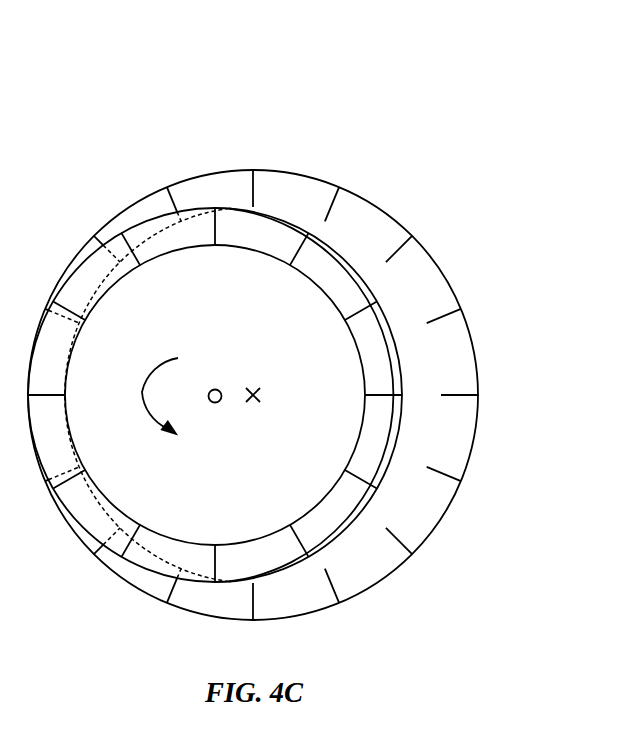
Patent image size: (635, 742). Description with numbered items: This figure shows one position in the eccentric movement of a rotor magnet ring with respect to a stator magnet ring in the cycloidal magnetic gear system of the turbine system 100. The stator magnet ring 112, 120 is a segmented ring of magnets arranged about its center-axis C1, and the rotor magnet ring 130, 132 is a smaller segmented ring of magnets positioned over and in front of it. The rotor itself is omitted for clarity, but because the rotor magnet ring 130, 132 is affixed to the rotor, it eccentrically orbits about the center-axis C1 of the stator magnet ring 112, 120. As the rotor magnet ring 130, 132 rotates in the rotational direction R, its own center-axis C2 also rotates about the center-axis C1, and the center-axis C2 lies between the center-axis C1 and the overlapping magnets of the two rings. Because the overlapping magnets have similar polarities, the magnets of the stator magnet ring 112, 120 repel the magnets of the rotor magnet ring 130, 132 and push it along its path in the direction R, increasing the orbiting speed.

The turbine system 100 is at (305, 313).
The first stator magnet ring 112 is at (253, 380).
The stator magnet ring 120 is at (367, 197).
The first rotor magnet ring 130 is at (304, 395).
The second rotor magnet ring 132 is at (402, 430).
The center-axis of stator magnet ring C1 is at (254, 388).
The center-axis of rotor magnet ring C2 is at (215, 388).
The rotational direction R is at (142, 392).